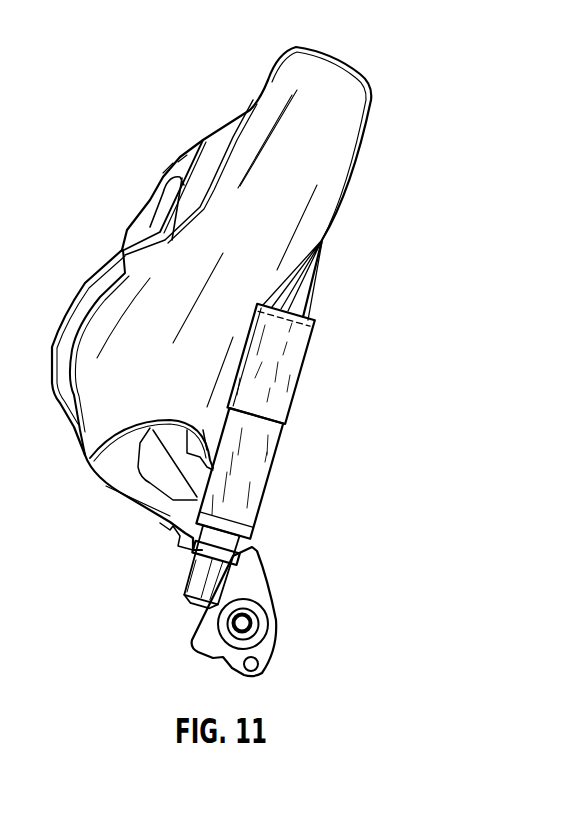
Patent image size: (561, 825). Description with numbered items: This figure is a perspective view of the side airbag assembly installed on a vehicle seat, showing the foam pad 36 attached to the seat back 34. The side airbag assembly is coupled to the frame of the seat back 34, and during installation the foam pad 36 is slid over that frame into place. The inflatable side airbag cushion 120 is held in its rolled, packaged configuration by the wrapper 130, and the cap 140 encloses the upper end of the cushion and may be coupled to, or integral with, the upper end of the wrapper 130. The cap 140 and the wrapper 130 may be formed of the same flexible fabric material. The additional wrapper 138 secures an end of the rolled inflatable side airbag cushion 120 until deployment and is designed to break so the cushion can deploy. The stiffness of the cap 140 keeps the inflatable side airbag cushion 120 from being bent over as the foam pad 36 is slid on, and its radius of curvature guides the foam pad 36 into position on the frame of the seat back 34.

The seat back 34 is at (350, 180).
The foam pad 36 is at (350, 117).
The cap 140 is at (302, 343).
The wrapper 130 is at (262, 433).
The additional wrapper 138 is at (190, 548).
The inflatable side airbag cushion 120 is at (270, 575).